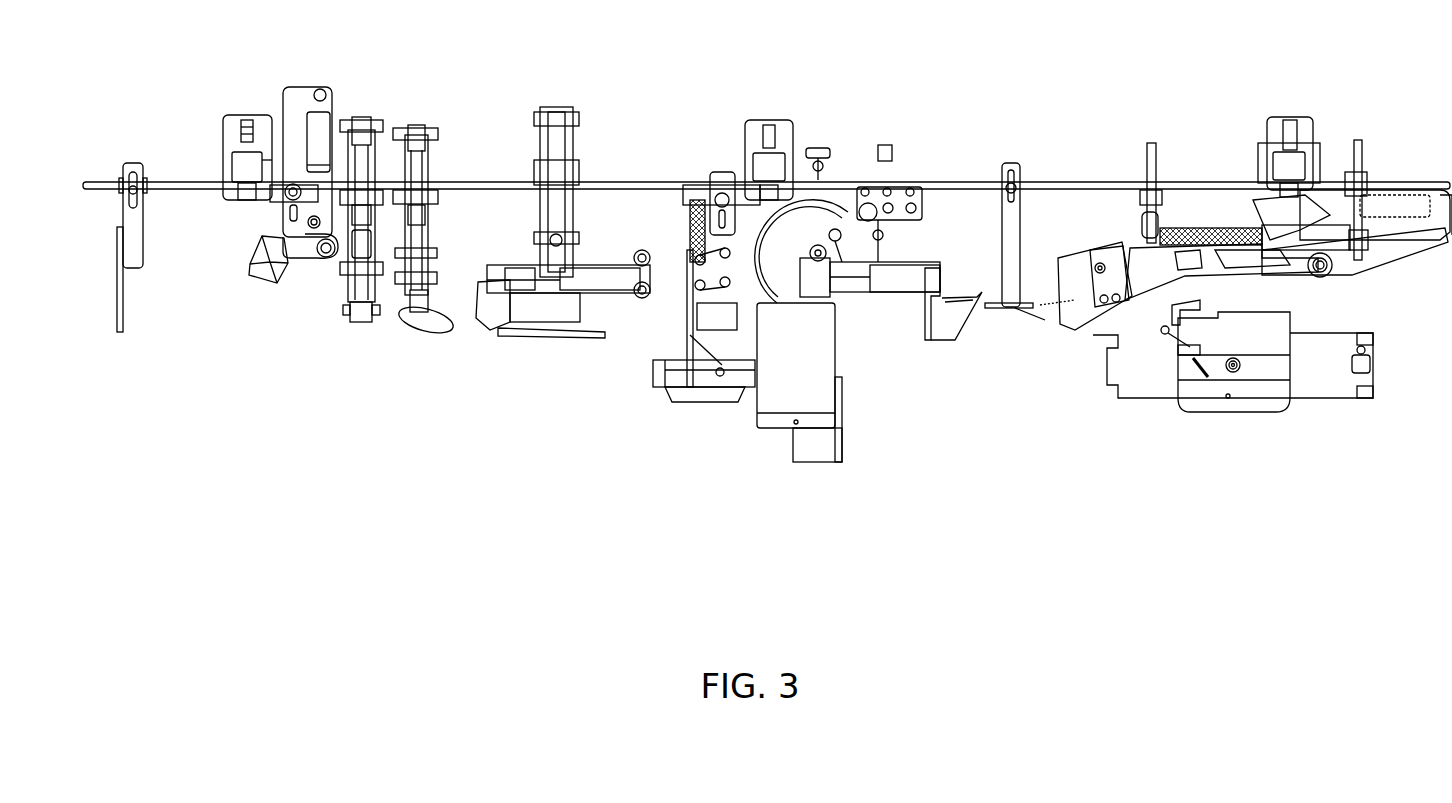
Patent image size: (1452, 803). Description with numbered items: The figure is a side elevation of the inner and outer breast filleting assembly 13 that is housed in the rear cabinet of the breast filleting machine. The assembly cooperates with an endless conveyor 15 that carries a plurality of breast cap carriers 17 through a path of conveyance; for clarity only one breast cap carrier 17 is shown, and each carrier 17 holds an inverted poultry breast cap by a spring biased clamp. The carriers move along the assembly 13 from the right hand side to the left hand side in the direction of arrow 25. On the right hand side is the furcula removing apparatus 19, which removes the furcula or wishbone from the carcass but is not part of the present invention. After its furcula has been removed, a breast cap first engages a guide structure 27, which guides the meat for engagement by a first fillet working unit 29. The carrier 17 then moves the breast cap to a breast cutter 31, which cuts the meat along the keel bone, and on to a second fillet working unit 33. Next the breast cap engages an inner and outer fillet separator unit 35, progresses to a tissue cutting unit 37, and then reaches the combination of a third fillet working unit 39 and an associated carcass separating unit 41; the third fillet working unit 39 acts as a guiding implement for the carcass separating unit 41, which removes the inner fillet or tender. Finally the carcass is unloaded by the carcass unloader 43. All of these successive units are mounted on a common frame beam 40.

The inner and outer breast filleting assembly 13 is at (487, 438).
The endless conveyor 15 is at (1325, 373).
The breast cap carrier 17 is at (1248, 402).
The furcula removing apparatus 19 is at (1325, 237).
The arrow 25 is at (1140, 433).
The guide structure 27 is at (1010, 235).
The first fillet working unit 29 is at (945, 330).
The breast cutter 31 is at (816, 392).
The second fillet working unit 33 is at (688, 402).
The inner and outer fillet separator unit 35 is at (563, 302).
The tissue cutting unit 37 is at (418, 327).
The third fillet working unit 39 is at (359, 322).
The common frame beam 40 is at (628, 180).
The carcass separating unit 41 is at (285, 258).
The carcass unloader 43 is at (122, 313).